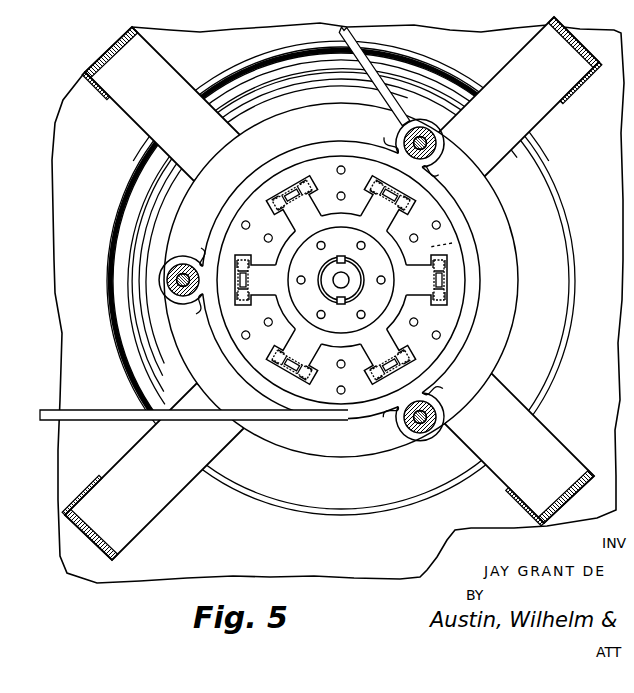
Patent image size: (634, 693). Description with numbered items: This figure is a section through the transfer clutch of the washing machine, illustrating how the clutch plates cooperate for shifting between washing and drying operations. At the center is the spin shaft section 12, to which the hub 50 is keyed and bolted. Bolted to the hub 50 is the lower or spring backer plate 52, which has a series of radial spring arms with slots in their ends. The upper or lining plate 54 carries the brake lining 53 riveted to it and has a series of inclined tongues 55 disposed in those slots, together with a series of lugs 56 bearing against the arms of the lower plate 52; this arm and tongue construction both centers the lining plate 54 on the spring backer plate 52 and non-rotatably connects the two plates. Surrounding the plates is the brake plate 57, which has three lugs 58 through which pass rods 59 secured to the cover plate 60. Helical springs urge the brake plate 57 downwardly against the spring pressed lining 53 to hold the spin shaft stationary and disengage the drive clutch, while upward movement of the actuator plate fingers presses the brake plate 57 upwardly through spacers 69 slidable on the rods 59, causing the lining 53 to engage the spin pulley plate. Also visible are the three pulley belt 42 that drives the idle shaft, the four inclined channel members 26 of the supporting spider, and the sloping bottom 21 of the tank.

The spin shaft section 12 is at (337, 285).
The sloping bottom 21 is at (63, 127).
The inclined channel members 26 is at (168, 78).
The three pulley belt 42 is at (365, 62).
The hub 50 is at (302, 262).
The spring backer plate 52 is at (368, 205).
The brake lining 53 is at (452, 243).
The lining plate 54 is at (437, 241).
The inclined tongues 55 is at (287, 192).
The lugs 56 is at (265, 210).
The brake plate 57 is at (207, 321).
The lugs 58 is at (173, 258).
The rods 59 is at (182, 290).
The cover plate 60 is at (127, 193).
The spacers 69 is at (184, 264).